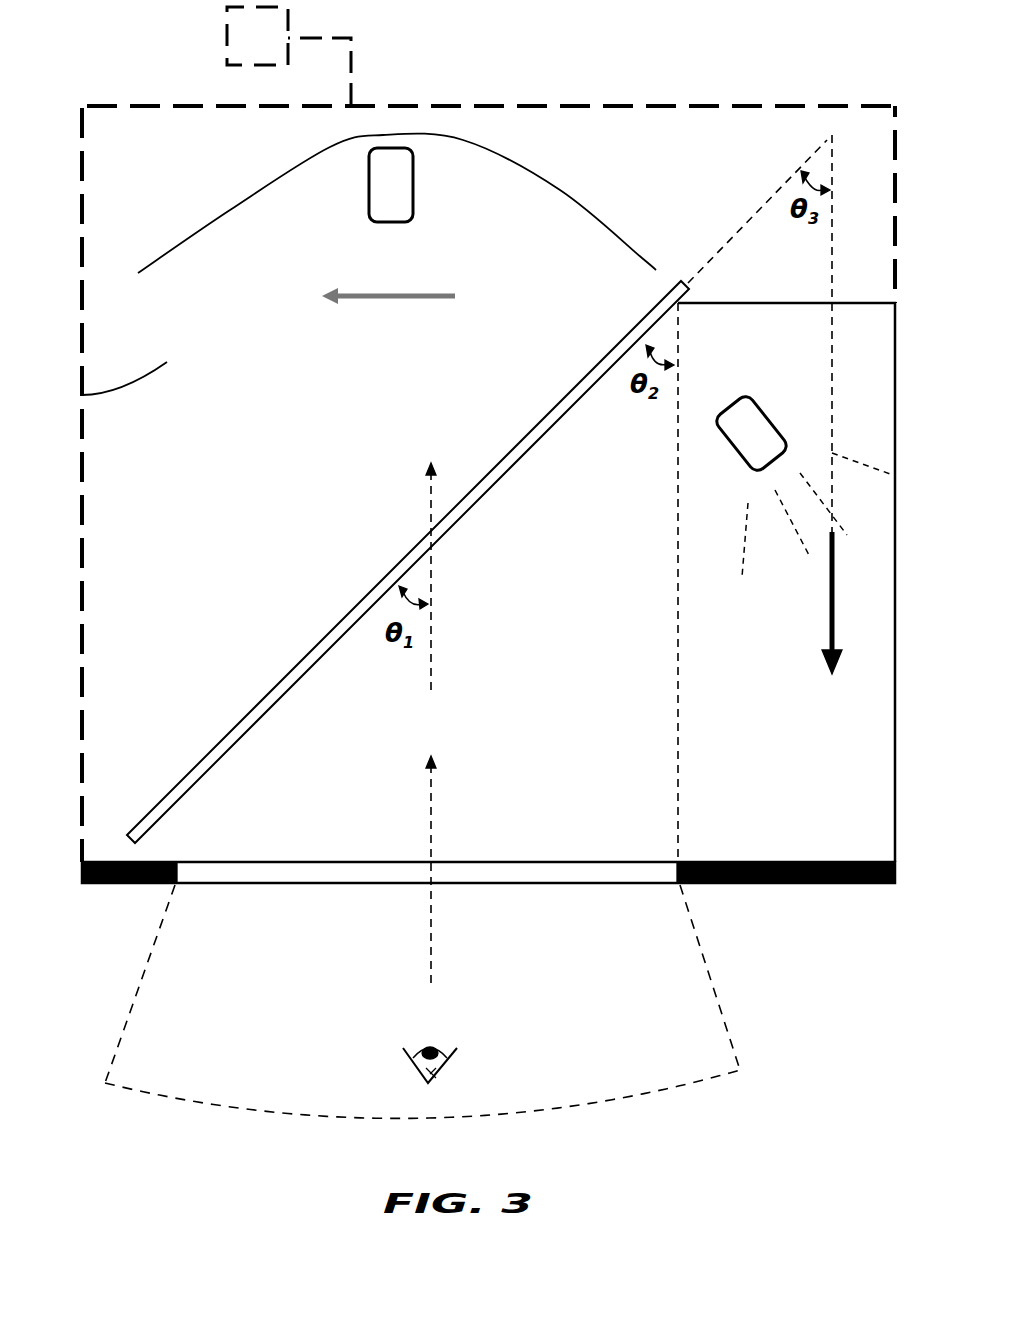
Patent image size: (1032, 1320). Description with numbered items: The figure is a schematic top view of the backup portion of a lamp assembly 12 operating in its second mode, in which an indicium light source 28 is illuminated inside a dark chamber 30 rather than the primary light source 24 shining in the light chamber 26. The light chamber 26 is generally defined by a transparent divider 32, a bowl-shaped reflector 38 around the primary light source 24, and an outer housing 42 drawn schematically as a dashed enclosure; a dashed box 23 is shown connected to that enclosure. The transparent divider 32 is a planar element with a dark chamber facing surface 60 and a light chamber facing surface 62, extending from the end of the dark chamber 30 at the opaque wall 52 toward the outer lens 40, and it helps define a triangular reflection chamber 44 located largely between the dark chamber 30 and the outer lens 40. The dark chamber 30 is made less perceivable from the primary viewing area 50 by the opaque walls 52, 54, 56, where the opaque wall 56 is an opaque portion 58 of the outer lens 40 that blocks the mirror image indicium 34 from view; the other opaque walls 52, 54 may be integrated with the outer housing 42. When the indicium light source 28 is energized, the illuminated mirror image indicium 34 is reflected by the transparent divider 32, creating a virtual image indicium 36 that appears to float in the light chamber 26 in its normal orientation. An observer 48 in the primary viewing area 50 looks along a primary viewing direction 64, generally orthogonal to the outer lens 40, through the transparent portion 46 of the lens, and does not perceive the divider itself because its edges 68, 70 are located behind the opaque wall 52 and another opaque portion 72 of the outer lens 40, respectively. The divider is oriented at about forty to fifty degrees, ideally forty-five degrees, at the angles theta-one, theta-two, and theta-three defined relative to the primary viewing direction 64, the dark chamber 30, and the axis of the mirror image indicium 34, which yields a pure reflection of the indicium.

The lamp assembly 12 is at (663, 76).
The controller 23 is at (227, 50).
The primary light source 24 is at (405, 184).
The light chamber 26 is at (82, 395).
The indicium light source 28 is at (748, 410).
The dark chamber 30 is at (866, 625).
The transparent divider 32 is at (557, 405).
The mirror image indicium 34 is at (828, 640).
The virtual image indicium 36 is at (415, 299).
The reflector 38 is at (556, 190).
The outer lens 40 is at (345, 883).
The outer housing 42 is at (82, 613).
The reflection chamber 44 is at (532, 830).
The transparent portion 46 is at (237, 873).
The observer 48 is at (436, 1078).
The primary viewing area 50 is at (617, 1097).
The opaque wall 52 is at (855, 303).
The opaque wall 54 is at (895, 392).
The opaque wall 56 is at (878, 885).
The opaque portion 58 is at (808, 885).
The dark chamber facing surface 60 is at (493, 488).
The light chamber facing surface 62 is at (473, 489).
The primary viewing direction 64 is at (432, 656).
The edge 68 is at (684, 281).
The edge 70 is at (127, 838).
The opaque portion 72 is at (148, 885).